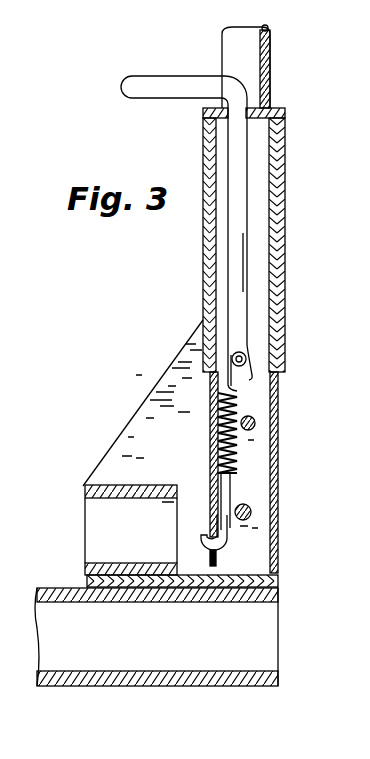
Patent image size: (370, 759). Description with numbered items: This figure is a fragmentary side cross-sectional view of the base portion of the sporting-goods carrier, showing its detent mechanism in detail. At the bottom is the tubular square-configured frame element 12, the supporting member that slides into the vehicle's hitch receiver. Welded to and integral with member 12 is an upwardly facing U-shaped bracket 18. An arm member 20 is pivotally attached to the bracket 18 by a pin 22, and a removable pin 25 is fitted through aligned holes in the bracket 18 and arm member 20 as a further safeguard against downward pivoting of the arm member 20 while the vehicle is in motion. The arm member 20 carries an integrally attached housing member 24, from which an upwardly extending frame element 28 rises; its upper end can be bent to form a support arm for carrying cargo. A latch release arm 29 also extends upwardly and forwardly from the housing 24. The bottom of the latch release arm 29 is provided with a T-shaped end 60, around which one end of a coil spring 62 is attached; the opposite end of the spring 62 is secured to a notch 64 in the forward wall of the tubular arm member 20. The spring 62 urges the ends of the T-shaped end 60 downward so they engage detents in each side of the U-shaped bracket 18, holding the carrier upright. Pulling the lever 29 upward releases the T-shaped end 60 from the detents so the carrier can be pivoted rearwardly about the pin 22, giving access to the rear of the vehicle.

The tubular square-configured frame element 12 is at (160, 686).
The U-shaped bracket 18 is at (142, 413).
The arm member 20 is at (278, 482).
The pin 22 is at (251, 512).
The housing member 24 is at (285, 168).
The removable pin 25 is at (255, 423).
The frame element 28 is at (270, 48).
The latch release arm 29 is at (146, 78).
The T-shaped end 60 is at (246, 358).
The coil spring 62 is at (215, 565).
The notch 64 is at (216, 566).